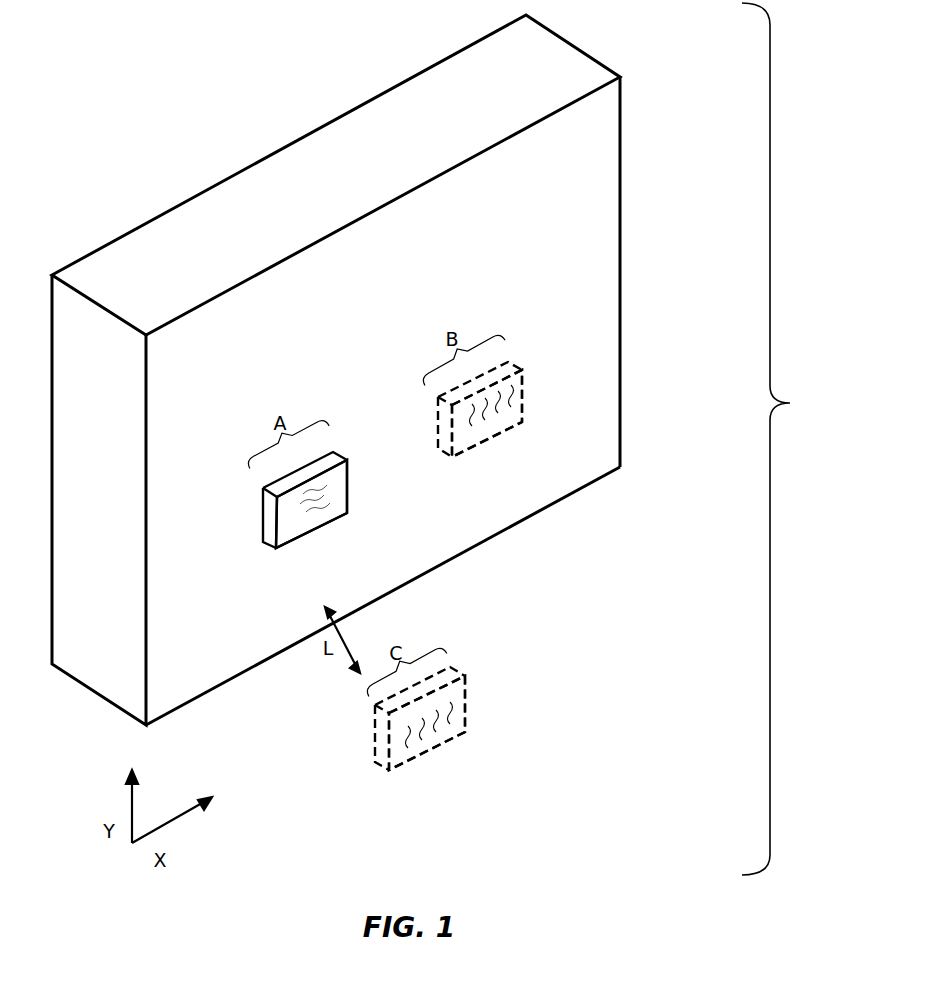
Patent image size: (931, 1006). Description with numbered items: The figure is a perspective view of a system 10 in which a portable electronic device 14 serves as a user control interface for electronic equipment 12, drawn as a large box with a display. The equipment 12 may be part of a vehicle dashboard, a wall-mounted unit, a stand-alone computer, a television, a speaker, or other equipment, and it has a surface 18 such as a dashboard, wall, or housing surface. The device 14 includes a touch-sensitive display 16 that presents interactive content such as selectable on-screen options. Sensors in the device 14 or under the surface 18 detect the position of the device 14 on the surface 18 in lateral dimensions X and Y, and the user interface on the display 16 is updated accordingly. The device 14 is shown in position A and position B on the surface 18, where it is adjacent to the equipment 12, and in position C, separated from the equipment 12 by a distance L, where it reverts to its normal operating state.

The system 10 is at (790, 403).
The electronic equipment 12 is at (183, 207).
The electronic device 14 is at (333, 523).
The display 16 is at (290, 526).
The surface 18 is at (488, 539).